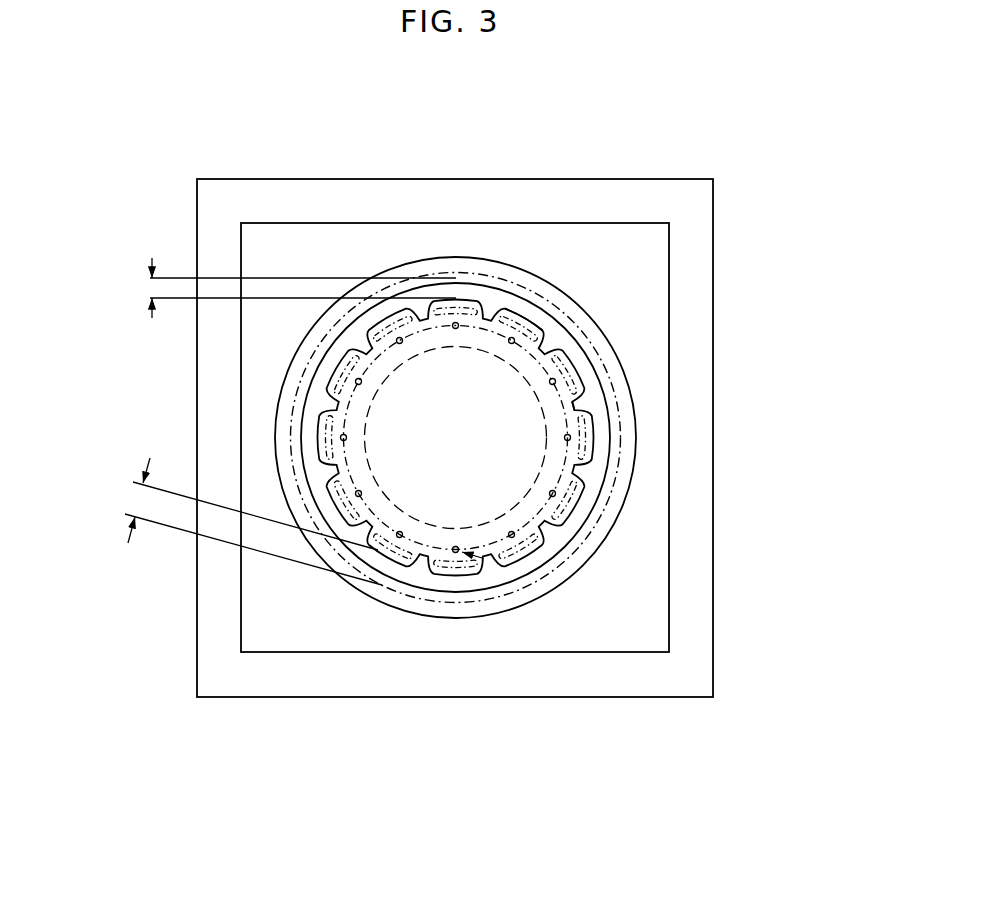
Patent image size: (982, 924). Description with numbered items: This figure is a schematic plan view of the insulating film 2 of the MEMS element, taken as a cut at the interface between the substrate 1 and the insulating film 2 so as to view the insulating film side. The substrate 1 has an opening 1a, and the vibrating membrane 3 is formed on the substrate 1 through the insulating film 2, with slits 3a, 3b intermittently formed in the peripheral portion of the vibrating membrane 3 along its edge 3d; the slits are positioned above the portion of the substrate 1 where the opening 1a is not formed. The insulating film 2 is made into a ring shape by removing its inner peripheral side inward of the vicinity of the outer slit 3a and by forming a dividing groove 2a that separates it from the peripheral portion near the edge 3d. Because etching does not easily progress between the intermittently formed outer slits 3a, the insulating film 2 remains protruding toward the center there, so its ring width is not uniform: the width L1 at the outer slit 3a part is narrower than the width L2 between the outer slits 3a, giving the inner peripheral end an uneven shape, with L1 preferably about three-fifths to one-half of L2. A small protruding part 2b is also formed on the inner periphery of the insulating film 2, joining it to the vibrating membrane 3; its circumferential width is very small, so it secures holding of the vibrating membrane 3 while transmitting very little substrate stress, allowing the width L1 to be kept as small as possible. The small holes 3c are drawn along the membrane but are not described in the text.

The substrate 1 is at (698, 270).
The opening 1a is at (540, 578).
The insulating film 2 is at (603, 467).
The dividing groove 2a is at (567, 577).
The protruding part 2b is at (457, 556).
The vibrating membrane 3 is at (488, 276).
The outer slit 3a is at (527, 320).
The slit 3b is at (588, 408).
The holes of rotating member 3c is at (552, 381).
The edge 3d is at (540, 292).
The width of the insulating film at the outer slit part L1 is at (148, 290).
The width of the insulating film between the outer slits L2 is at (137, 500).